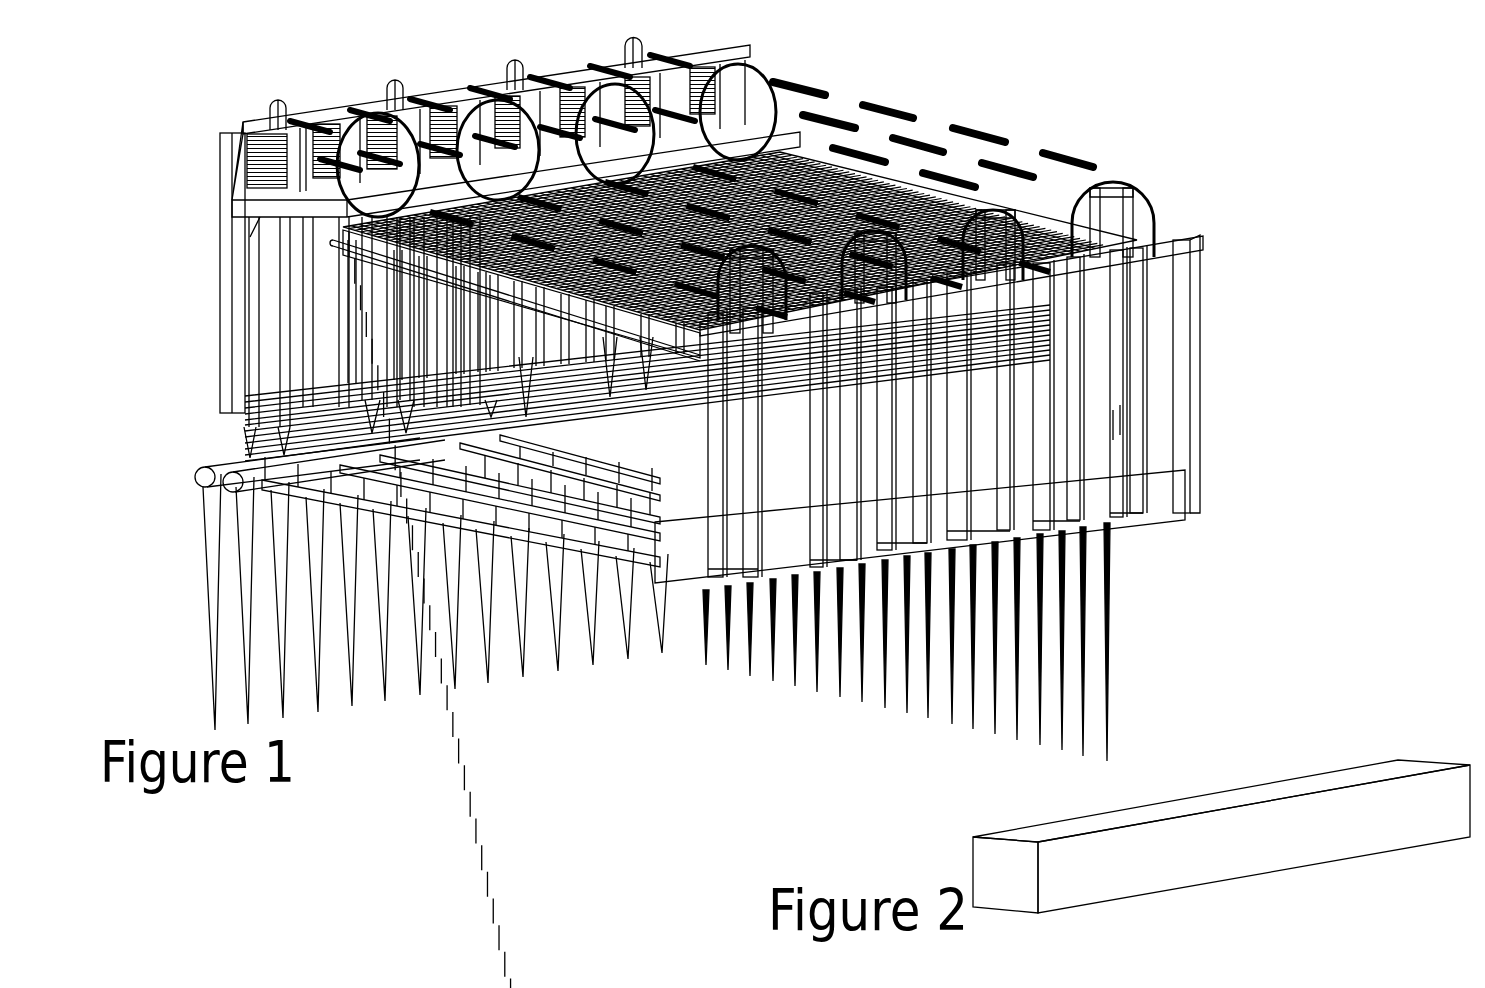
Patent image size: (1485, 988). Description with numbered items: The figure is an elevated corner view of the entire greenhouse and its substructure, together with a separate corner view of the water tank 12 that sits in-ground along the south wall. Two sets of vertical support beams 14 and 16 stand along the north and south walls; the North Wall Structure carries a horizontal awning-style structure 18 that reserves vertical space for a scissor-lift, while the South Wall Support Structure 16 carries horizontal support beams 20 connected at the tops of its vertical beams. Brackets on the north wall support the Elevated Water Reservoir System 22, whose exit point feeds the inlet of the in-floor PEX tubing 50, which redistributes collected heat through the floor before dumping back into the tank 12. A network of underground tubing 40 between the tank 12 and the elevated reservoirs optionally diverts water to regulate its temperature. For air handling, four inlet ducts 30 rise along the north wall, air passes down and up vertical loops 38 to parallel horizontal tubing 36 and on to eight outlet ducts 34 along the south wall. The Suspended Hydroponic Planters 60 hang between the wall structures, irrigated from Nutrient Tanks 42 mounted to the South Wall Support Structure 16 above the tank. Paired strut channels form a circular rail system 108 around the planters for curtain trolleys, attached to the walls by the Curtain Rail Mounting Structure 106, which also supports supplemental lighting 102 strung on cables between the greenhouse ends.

In FIG. 1, the tank 12 is at (1143, 502).
In FIG. 2, the tank 12 is at (1088, 822).
In FIG. 1, the vertical support beams 14 is at (232, 355).
In FIG. 1, the South Wall Support Structure 16 is at (1195, 290).
In FIG. 1, the horizontal awning-style structure 18 is at (272, 213).
In FIG. 1, the horizontal support beams 20 is at (1170, 247).
In FIG. 1, the Elevated Water Reservoir System 22 is at (380, 110).
In FIG. 1, the inlet ducts 30 is at (257, 431).
In FIG. 1, the outlet ducts 34 is at (1182, 355).
In FIG. 1, the parallel horizontal tubing 36 is at (310, 498).
In FIG. 1, the vertical loops 38 is at (215, 665).
In FIG. 1, the network of underground tubing 40 is at (1112, 628).
In FIG. 1, the Nutrient Tanks 42 is at (1117, 415).
In FIG. 1, the tubing 50 is at (197, 481).
In FIG. 1, the Suspended Hydroponic Planters 60 is at (903, 180).
In FIG. 1, the supplemental lighting 102 is at (980, 130).
In FIG. 1, the Curtain Rail Mounting Structure 106 is at (1132, 222).
In FIG. 1, the circular rail system 108 is at (1098, 180).